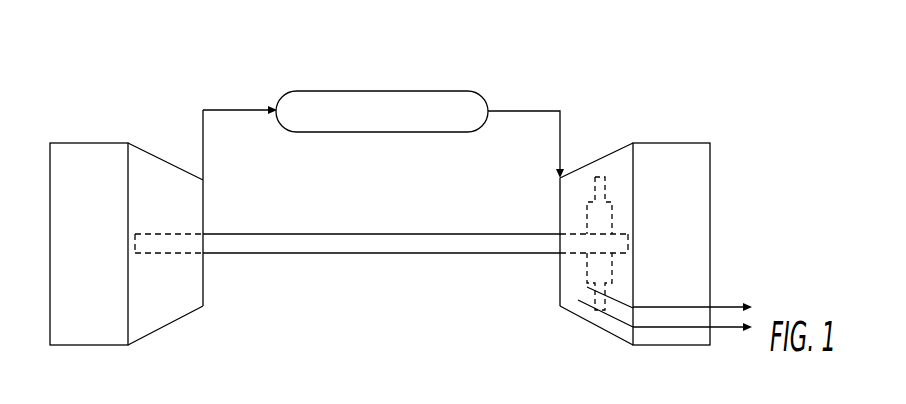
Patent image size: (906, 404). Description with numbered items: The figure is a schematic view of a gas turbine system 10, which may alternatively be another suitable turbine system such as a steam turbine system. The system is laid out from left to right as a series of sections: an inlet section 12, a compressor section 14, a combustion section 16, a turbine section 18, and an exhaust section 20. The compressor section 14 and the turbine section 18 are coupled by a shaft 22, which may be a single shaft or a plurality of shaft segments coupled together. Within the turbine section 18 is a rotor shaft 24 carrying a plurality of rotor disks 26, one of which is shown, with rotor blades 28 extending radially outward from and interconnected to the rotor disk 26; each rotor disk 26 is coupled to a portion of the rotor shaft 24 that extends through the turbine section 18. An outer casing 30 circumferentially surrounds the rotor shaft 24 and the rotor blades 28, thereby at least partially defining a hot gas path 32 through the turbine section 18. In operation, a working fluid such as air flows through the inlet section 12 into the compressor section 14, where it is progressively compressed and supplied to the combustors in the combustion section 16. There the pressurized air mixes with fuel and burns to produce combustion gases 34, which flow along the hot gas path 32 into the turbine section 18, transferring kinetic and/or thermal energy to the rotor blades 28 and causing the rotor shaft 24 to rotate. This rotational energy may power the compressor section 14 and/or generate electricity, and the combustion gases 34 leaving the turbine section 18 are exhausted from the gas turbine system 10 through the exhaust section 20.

The gas turbine system 10 is at (168, 60).
The inlet section 12 is at (70, 143).
The compressor section 14 is at (160, 157).
The combustion section 16 is at (432, 91).
The turbine section 18 is at (629, 143).
The exhaust section 20 is at (688, 143).
The shaft 22 is at (348, 254).
The rotor shaft 24 is at (624, 233).
The rotor disk 26 is at (588, 225).
The rotor blades 28 is at (597, 180).
The outer casing 30 is at (620, 340).
The hot gas path 32 is at (600, 312).
The combustion gases 34 is at (540, 114).